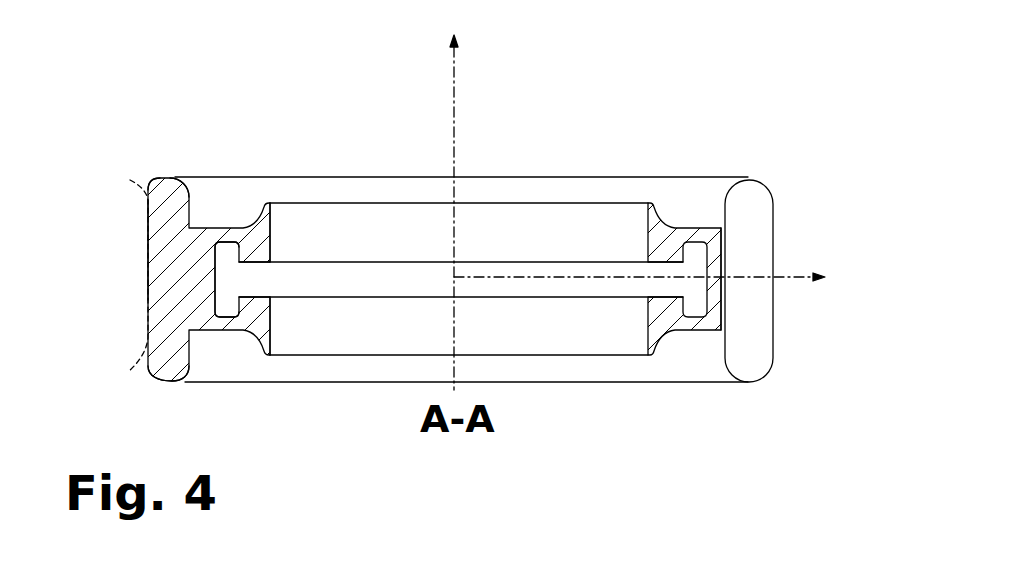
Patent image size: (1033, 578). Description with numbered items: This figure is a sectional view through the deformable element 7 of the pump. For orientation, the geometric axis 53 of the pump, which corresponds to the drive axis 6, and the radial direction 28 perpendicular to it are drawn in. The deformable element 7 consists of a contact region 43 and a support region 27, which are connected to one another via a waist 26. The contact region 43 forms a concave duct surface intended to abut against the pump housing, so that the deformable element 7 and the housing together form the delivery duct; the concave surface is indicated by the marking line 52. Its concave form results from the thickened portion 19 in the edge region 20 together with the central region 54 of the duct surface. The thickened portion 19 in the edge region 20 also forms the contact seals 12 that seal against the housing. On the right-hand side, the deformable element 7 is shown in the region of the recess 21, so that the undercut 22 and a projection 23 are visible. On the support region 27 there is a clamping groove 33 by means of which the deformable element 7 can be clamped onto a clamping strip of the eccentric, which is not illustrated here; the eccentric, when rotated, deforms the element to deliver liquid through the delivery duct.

The drive axis 6 is at (456, 88).
The deformable element 7 is at (821, 69).
The contact seal 12 is at (156, 176).
The thickened portion 19 is at (153, 178).
The edge region 20 is at (168, 177).
The recess 21 is at (717, 275).
The undercut 22 is at (721, 317).
The projection 23 is at (750, 190).
The waist 26 is at (229, 212).
The support region 27 is at (284, 239).
The radial direction 28 is at (137, 288).
The clamping groove 33 is at (380, 273).
The contact region 43 is at (168, 388).
The marking line 52 is at (142, 198).
The geometric axis 53 is at (456, 55).
The central region 54 is at (148, 248).